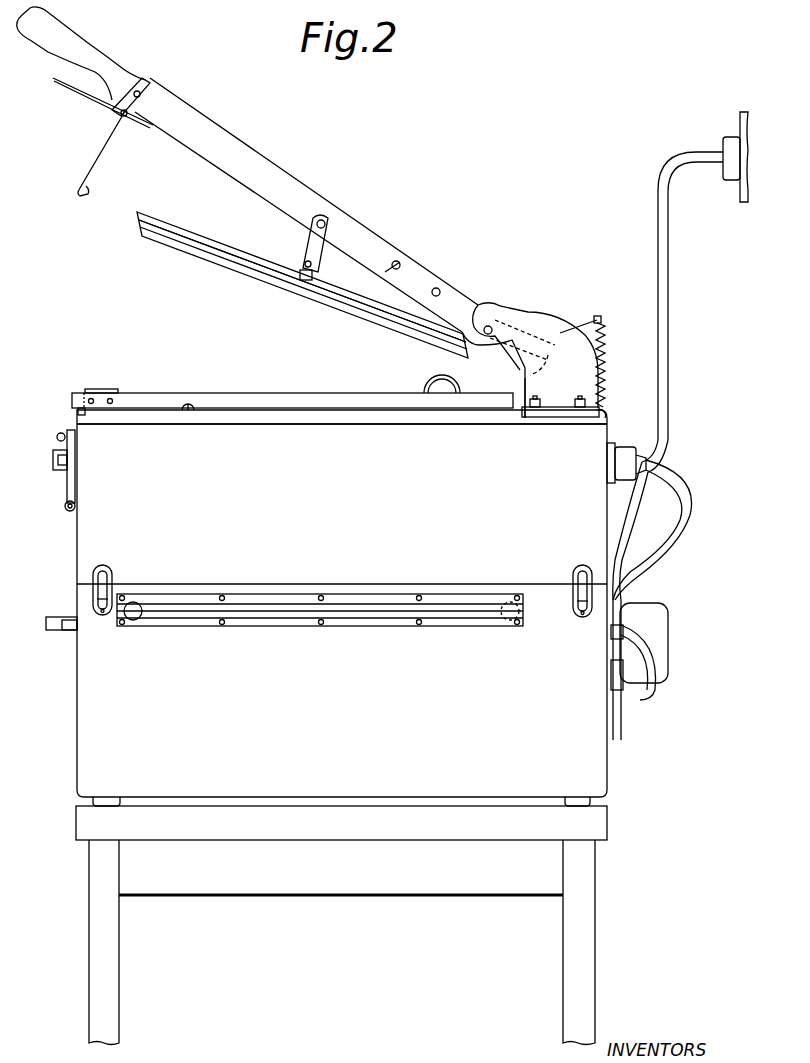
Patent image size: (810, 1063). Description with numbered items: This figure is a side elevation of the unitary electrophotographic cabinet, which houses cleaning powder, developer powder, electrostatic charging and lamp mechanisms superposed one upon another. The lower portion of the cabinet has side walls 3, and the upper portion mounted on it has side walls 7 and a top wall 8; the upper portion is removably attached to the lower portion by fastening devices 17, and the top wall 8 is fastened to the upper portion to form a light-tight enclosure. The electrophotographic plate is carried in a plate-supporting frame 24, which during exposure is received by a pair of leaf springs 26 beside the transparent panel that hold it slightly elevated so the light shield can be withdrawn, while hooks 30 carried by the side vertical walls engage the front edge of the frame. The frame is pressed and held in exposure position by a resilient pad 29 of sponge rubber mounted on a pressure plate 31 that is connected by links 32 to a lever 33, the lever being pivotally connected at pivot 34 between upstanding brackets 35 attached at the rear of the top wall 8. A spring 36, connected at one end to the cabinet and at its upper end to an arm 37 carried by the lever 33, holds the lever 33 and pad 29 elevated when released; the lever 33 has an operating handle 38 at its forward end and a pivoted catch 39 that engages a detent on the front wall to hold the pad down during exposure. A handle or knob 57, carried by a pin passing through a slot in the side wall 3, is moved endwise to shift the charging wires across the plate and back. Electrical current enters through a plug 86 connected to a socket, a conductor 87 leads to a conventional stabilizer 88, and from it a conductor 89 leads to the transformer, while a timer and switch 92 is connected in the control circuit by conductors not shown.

The side walls 3 is at (86, 720).
The side walls 7 is at (92, 526).
The top wall 8 is at (182, 422).
The fastening devices 17 is at (113, 582).
The plate-supporting frame 24 is at (72, 633).
The leaf springs 26 is at (456, 382).
The resilient pad 29 is at (375, 318).
The hooks 30 is at (70, 400).
The pressure plate 31 is at (352, 292).
The links 32 is at (314, 248).
The lever 33 is at (367, 240).
The pivot 34 is at (490, 330).
The upstanding brackets 35 is at (536, 376).
The spring 36 is at (604, 362).
The arm 37 is at (592, 322).
The operating handle 38 is at (82, 56).
The pivoted catch 39 is at (100, 152).
The handle or knob 57 is at (134, 612).
The plug 86 is at (740, 120).
The conductor 87 is at (658, 190).
The stabilizer 88 is at (668, 644).
The conductor 89 is at (690, 512).
The timer and switch 92 is at (70, 472).